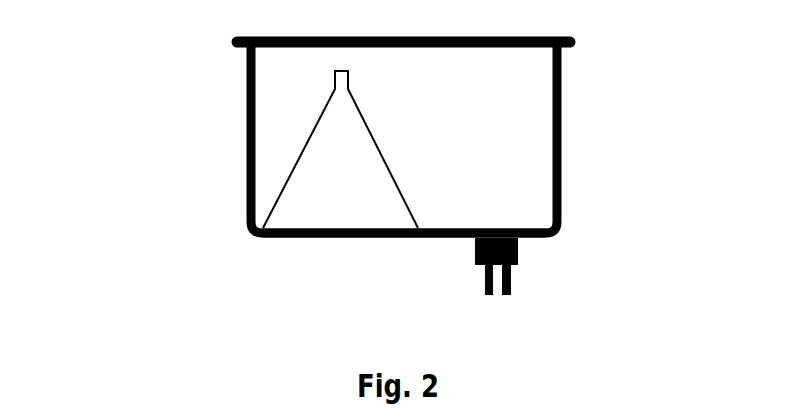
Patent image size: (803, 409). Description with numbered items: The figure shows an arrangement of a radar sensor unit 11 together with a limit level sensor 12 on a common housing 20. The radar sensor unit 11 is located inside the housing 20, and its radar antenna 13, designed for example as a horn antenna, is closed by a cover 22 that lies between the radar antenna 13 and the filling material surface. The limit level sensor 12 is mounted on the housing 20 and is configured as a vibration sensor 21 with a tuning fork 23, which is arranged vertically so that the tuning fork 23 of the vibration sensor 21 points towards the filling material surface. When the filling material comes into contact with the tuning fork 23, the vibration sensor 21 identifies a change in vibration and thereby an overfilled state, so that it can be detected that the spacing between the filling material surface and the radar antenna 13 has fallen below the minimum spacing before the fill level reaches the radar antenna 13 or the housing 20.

The radar sensor unit 11 is at (387, 130).
The limit level sensor 12 is at (524, 282).
The radar antenna 13 is at (322, 160).
The housing 20 is at (248, 195).
The vibration sensor 21 is at (518, 247).
The cover 22 is at (332, 238).
The tuning fork 23 is at (499, 297).